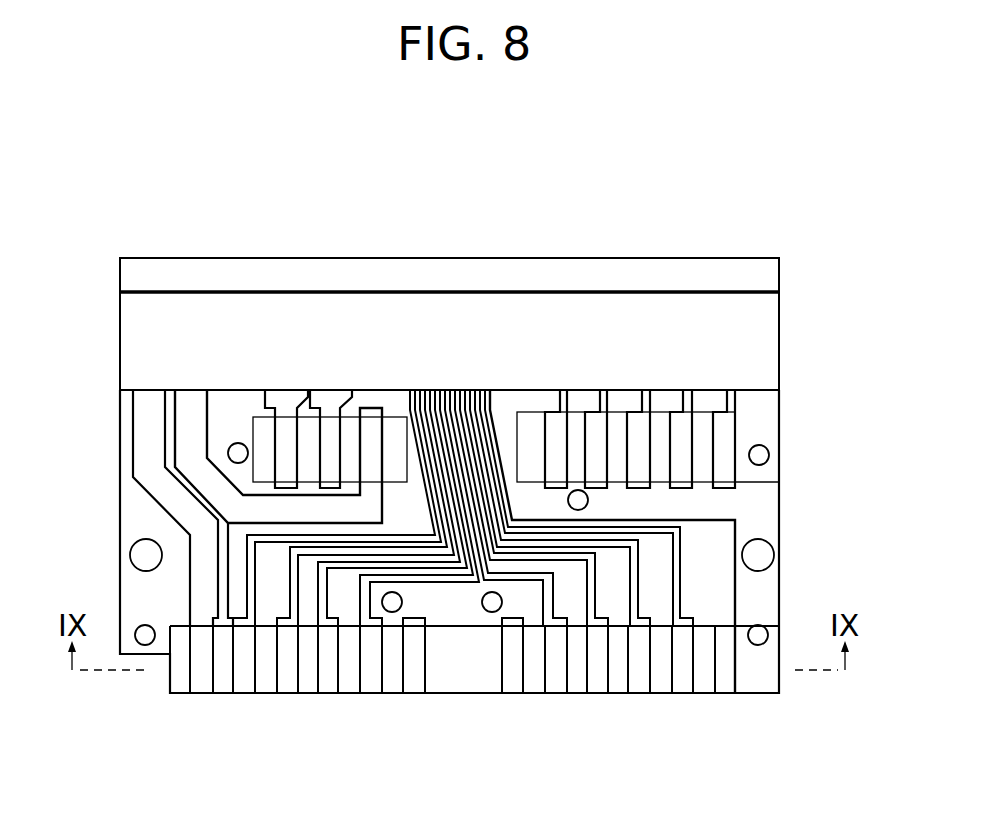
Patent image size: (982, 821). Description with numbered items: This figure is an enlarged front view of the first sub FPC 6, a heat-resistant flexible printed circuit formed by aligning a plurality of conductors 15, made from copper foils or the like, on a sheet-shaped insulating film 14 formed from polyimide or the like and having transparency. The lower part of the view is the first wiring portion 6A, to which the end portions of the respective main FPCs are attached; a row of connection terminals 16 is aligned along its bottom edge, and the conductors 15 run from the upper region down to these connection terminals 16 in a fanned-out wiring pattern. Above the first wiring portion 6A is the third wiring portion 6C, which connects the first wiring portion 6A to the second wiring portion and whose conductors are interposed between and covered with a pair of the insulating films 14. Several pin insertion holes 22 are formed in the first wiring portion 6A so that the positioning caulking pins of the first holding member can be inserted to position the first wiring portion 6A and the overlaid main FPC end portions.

The first sub FPC 6 is at (701, 227).
The first wiring portion 6A is at (767, 587).
The third wiring portion 6C is at (735, 350).
The insulating film 14 is at (133, 498).
The conductors 15 is at (143, 413).
The connection terminals 16 is at (288, 678).
The pin insertion holes 22 is at (238, 443).